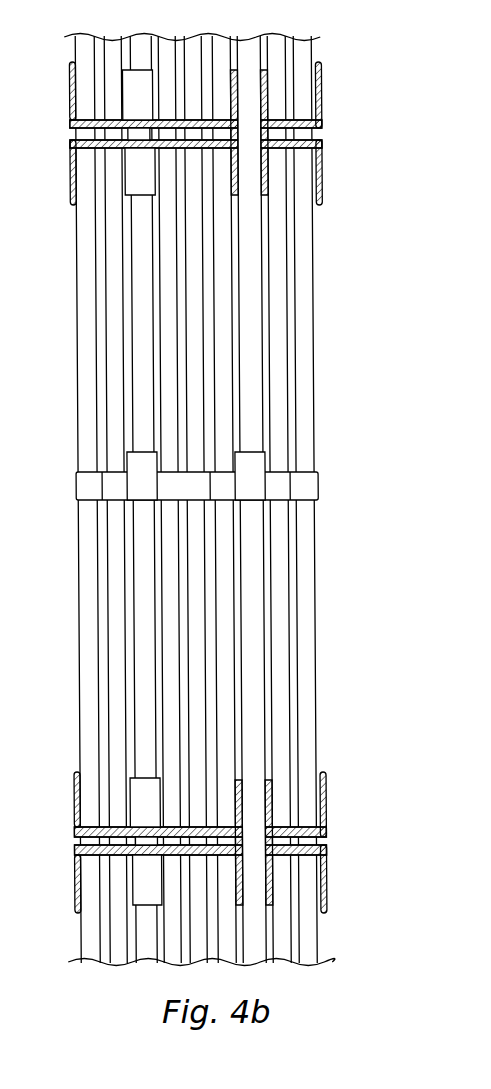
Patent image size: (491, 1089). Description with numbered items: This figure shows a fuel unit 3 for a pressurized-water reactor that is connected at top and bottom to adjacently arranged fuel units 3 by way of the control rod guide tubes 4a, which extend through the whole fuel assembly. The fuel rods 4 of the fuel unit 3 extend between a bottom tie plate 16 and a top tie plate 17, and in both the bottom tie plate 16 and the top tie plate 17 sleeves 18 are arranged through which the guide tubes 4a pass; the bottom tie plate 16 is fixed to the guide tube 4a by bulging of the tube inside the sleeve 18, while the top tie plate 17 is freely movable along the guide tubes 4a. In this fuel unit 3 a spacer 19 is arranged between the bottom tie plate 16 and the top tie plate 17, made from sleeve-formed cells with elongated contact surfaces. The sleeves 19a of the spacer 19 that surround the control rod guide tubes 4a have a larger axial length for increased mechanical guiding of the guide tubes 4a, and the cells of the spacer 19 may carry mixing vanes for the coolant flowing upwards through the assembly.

The fuel unit 3 is at (193, 500).
The fuel rods 4 is at (278, 330).
The guide tubes 4a is at (145, 636).
The bottom tie plate 16 is at (323, 92).
The top tie plate 17 is at (323, 172).
The sleeves 18 is at (262, 192).
The spacer 19 is at (318, 482).
The sleeves 19a is at (258, 462).